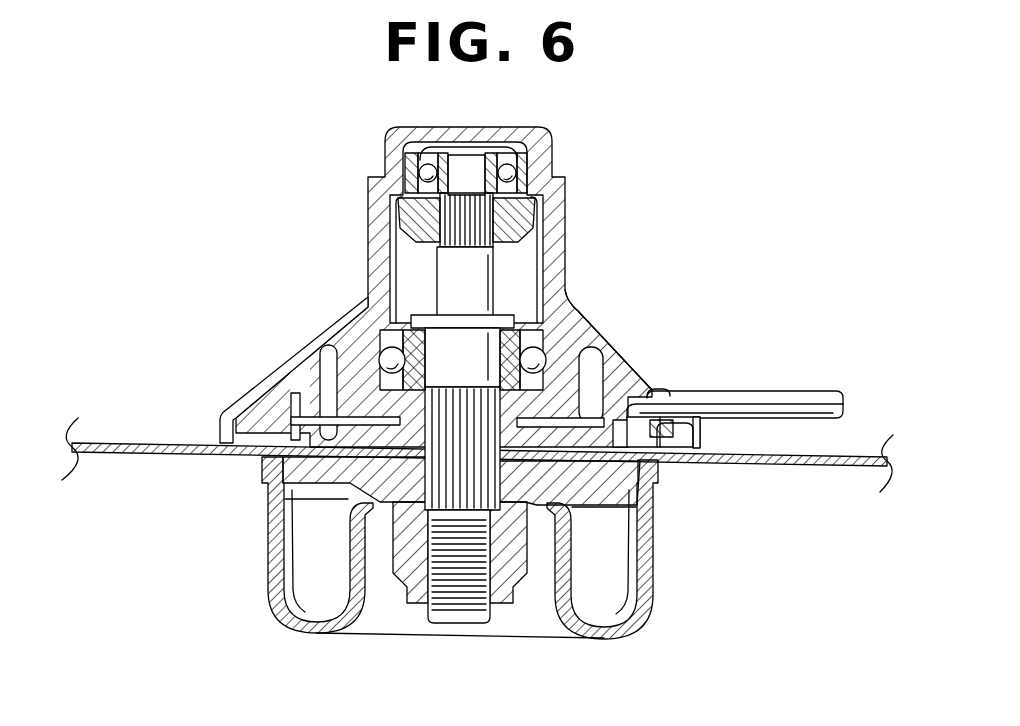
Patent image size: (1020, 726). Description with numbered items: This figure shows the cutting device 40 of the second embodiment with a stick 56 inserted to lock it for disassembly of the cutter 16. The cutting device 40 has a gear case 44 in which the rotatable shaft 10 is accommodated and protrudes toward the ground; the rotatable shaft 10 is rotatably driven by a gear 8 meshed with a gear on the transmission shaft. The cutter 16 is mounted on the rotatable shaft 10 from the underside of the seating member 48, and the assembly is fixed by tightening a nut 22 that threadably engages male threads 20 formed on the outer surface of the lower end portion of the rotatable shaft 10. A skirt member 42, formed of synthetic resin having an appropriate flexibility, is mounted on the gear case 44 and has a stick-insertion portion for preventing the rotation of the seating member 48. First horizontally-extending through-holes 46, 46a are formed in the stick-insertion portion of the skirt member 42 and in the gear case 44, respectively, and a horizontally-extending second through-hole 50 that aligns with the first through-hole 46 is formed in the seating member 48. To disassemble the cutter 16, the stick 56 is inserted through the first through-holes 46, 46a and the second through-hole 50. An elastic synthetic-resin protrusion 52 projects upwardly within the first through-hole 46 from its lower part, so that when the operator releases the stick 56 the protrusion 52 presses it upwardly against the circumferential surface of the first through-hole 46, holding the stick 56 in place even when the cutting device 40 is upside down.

The gear 8 is at (400, 220).
The rotatable shaft 10 is at (431, 272).
The cutter 16 is at (827, 467).
The male threads 20 is at (453, 607).
The nut 22 is at (398, 575).
The cutting device 40 is at (592, 191).
The skirt member 42 is at (277, 377).
The gear case 44 is at (585, 305).
The first horizontally-extending through-hole 46 is at (672, 390).
The first horizontally-extending through-hole 46a is at (645, 385).
The seating member 48 is at (290, 497).
The second through-hole 50 is at (688, 398).
The protrusion 52 is at (662, 423).
The stick 56 is at (808, 403).